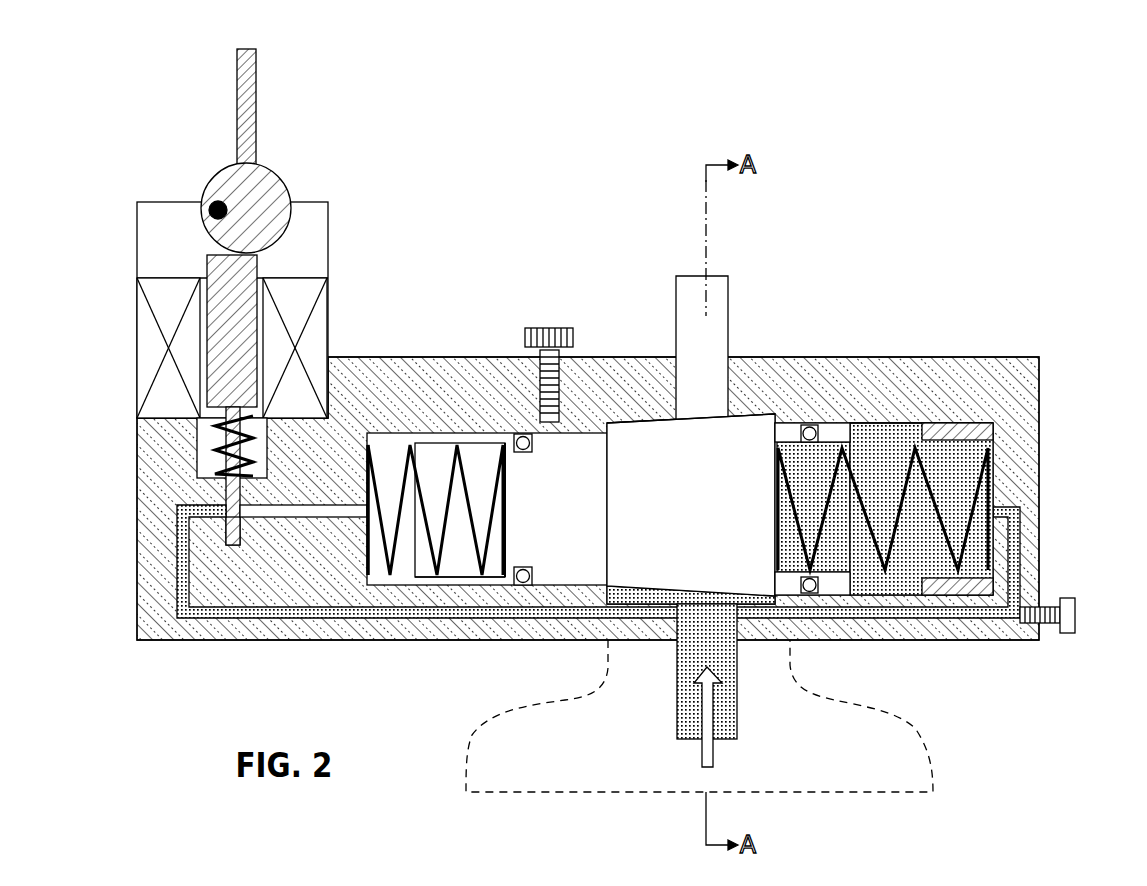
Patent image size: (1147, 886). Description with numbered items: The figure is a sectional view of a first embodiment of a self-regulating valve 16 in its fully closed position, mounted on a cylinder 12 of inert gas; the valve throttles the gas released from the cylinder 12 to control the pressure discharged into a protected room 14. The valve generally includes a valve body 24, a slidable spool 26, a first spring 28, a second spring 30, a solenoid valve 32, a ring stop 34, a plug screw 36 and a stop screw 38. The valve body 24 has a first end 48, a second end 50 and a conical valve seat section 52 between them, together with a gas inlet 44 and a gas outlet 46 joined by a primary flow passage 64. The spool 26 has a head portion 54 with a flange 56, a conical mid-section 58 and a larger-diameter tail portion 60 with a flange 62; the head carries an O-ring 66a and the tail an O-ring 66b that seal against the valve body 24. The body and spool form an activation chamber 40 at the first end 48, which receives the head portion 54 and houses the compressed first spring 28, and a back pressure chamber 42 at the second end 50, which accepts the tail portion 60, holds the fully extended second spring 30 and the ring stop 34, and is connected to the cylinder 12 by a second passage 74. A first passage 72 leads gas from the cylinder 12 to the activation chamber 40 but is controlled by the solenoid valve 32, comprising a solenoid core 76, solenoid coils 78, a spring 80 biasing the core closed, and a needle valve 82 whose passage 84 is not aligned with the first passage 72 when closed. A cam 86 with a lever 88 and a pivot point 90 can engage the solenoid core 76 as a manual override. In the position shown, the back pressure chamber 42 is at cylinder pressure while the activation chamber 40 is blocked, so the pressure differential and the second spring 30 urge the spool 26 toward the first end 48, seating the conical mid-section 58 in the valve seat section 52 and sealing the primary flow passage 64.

The cylinder 12 is at (933, 750).
The protected room 14 is at (507, 210).
The self-regulating valve 16 is at (868, 220).
The valve body 24 is at (900, 435).
The spool 26 is at (685, 436).
The first spring 28 is at (386, 578).
The second spring 30 is at (1000, 462).
The solenoid valve 32 is at (235, 233).
The ring stop 34 is at (960, 440).
The plug screw 36 is at (1085, 615).
The stop screw 38 is at (547, 328).
The activation chamber 40 is at (448, 566).
The back pressure chamber 42 is at (975, 540).
The gas inlet 44 is at (737, 710).
The gas outlet 46 is at (716, 296).
The first end 48 is at (412, 425).
The second end 50 is at (871, 420).
The valve seat section 52 is at (620, 420).
The head portion 54 is at (475, 580).
The flange 56 is at (447, 443).
The conical mid-section 58 is at (762, 585).
The tail portion 60 is at (838, 585).
The flange 62 is at (790, 432).
The primary flow passage 64 is at (655, 425).
The O-ring 66a is at (523, 587).
The O-ring 66b is at (812, 437).
The first passage 72 is at (178, 582).
The second passage 74 is at (1020, 572).
The solenoid core 76 is at (207, 256).
The solenoid coils 78 is at (150, 392).
The spring 80 is at (215, 455).
The needle valve 82 is at (225, 525).
The passage 84 is at (225, 490).
The cam 86 is at (272, 182).
The lever 88 is at (250, 82).
The pivot point 90 is at (215, 203).